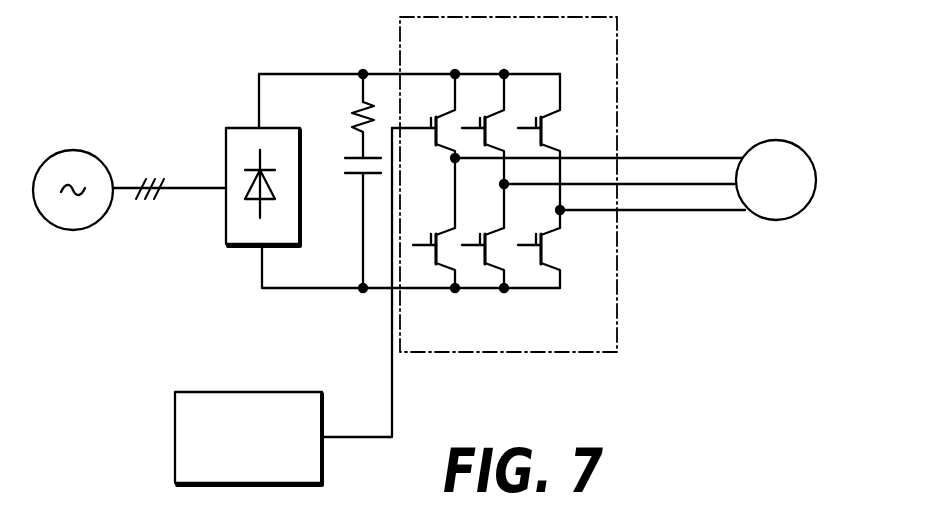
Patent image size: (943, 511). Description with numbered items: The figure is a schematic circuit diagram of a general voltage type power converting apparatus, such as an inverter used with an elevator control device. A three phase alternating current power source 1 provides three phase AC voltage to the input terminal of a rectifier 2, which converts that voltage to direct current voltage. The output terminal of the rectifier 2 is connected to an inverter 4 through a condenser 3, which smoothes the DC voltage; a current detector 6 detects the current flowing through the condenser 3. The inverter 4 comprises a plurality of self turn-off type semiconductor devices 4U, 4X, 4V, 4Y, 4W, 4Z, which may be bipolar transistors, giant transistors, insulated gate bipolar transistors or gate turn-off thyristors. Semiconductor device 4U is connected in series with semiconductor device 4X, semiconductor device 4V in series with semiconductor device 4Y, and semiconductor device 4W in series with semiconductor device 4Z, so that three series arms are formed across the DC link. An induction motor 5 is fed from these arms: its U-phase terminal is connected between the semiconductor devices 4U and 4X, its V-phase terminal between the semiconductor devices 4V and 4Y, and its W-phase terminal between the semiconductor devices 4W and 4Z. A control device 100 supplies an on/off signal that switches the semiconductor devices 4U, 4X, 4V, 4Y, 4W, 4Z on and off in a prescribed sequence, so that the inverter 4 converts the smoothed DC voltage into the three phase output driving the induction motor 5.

The three phase alternating current power source 1 is at (80, 150).
The rectifier 2 is at (225, 237).
The condenser 3 is at (352, 148).
The inverter 4 is at (618, 38).
The semiconductor device 4U is at (425, 149).
The semiconductor device 4V is at (484, 149).
The semiconductor device 4W is at (537, 151).
The semiconductor device 4X is at (435, 249).
The semiconductor device 4Y is at (484, 249).
The semiconductor device 4Z is at (538, 247).
The induction motor 5 is at (782, 140).
The current detector 6 is at (350, 95).
The control device 100 is at (227, 392).